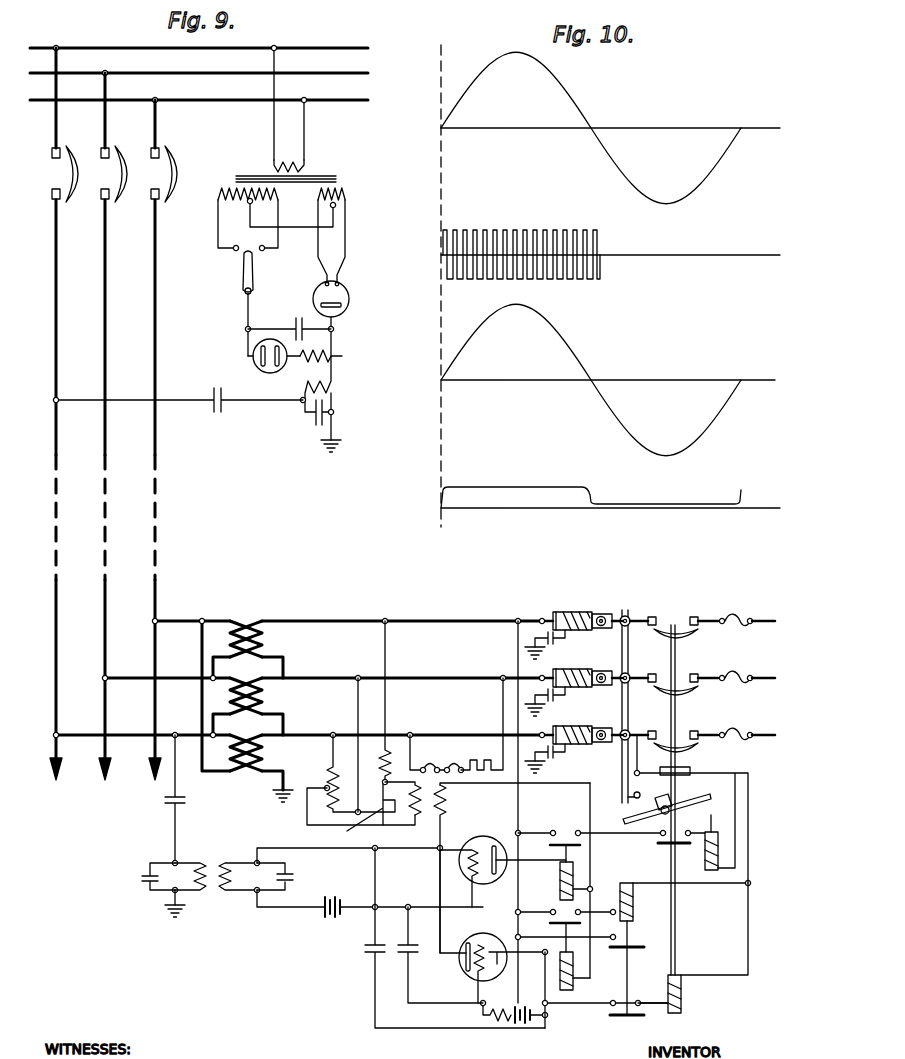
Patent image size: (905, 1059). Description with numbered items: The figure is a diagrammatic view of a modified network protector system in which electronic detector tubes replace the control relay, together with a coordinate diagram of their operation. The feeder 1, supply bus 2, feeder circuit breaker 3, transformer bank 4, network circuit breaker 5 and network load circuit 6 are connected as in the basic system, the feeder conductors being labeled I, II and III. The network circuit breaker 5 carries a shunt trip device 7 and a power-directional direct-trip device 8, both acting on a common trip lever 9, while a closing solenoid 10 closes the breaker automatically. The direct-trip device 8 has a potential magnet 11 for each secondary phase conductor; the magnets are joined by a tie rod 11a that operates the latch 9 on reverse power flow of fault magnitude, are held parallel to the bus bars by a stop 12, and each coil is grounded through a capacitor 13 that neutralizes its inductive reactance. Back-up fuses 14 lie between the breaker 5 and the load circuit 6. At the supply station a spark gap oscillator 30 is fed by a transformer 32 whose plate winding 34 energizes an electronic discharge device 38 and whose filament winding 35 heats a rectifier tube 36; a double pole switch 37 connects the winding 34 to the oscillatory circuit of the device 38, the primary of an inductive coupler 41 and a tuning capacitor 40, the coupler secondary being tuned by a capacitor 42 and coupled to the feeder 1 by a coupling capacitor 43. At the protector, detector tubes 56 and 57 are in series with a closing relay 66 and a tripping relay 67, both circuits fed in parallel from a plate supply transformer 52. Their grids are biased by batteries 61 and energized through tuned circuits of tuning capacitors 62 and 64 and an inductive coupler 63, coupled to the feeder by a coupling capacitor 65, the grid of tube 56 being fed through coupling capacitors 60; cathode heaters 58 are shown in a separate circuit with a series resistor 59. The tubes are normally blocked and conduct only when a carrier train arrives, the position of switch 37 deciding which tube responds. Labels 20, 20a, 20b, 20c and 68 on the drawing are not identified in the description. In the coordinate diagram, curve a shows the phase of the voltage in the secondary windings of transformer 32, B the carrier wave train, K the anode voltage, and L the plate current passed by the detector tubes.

In FIG. 9, the feeder 1 is at (56, 343).
In FIG. 9, the supply bus 2 is at (320, 100).
In FIG. 9, the feeder circuit breaker 3 is at (193, 185).
In FIG. 9, the transformer bank 4 is at (259, 611).
In FIG. 9, the network circuit breaker 5 is at (679, 617).
In FIG. 9, the network load circuit 6 is at (775, 614).
In FIG. 9, the shunt trip device 7 is at (704, 866).
In FIG. 9, the power-directional direct-trip device 8 is at (604, 605).
In FIG. 9, the trip lever 9 is at (704, 806).
In FIG. 9, the closing motor or solenoid 10 is at (681, 1003).
In FIG. 9, the potential magnet 11 is at (598, 766).
In FIG. 9, the tie rod 11a is at (630, 652).
In FIG. 9, the stop 12 is at (622, 612).
In FIG. 9, the capacitor 13 is at (560, 760).
In FIG. 9, the back-up fuses 14 is at (740, 607).
In FIG. 9, the potentiometer resistor 20 is at (356, 735).
In FIG. 9, the potentiometer tap 20a is at (392, 745).
In FIG. 9, the potentiometer slider 20b is at (360, 830).
In FIG. 9, the resistor section 20c is at (336, 773).
In FIG. 9, the spark gap oscillator 30 is at (384, 273).
In FIG. 9, the transformer 32 is at (373, 189).
In FIG. 9, the secondary plate winding 34 is at (277, 219).
In FIG. 9, the secondary filament voltage winding 35 is at (348, 196).
In FIG. 9, the rectifier tube 36 is at (350, 300).
In FIG. 9, the double pole switch 37 is at (242, 283).
In FIG. 9, the electronic discharge device 38 is at (265, 369).
In FIG. 9, the tuning capacitor 40 is at (296, 327).
In FIG. 9, the inductive coupler 41 is at (333, 362).
In FIG. 9, the tuning capacitor 42 is at (318, 428).
In FIG. 9, the coupling capacitor 43 is at (222, 414).
In FIG. 9, the plate supply transformer 52 is at (428, 818).
In FIG. 9, the detector tube 56 is at (470, 932).
In FIG. 9, the detector tube 57 is at (484, 833).
In FIG. 9, the heaters 58 is at (442, 756).
In FIG. 9, the resistor 59 is at (496, 758).
In FIG. 9, the coupling capacitors 60 is at (380, 957).
In FIG. 9, the bias batteries 61 is at (333, 922).
In FIG. 9, the tuning capacitor 62 is at (290, 877).
In FIG. 9, the inductive coupler 63 is at (226, 855).
In FIG. 9, the tuning capacitor 64 is at (142, 878).
In FIG. 9, the coupling capacitor 65 is at (165, 800).
In FIG. 9, the closing relay 66 is at (576, 988).
In FIG. 9, the tripping relay 67 is at (556, 846).
In FIG. 9, the relay 68 is at (636, 963).
In FIG. 9, the phase line I is at (58, 268).
In FIG. 9, the phase line II is at (107, 268).
In FIG. 9, the phase line III is at (157, 275).
In FIG. 10, the sinusoidal curve a is at (610, 128).
In FIG. 10, the carrier wave train B is at (610, 254).
In FIG. 10, the anode voltage K is at (608, 380).
In FIG. 10, the plate current L is at (610, 497).